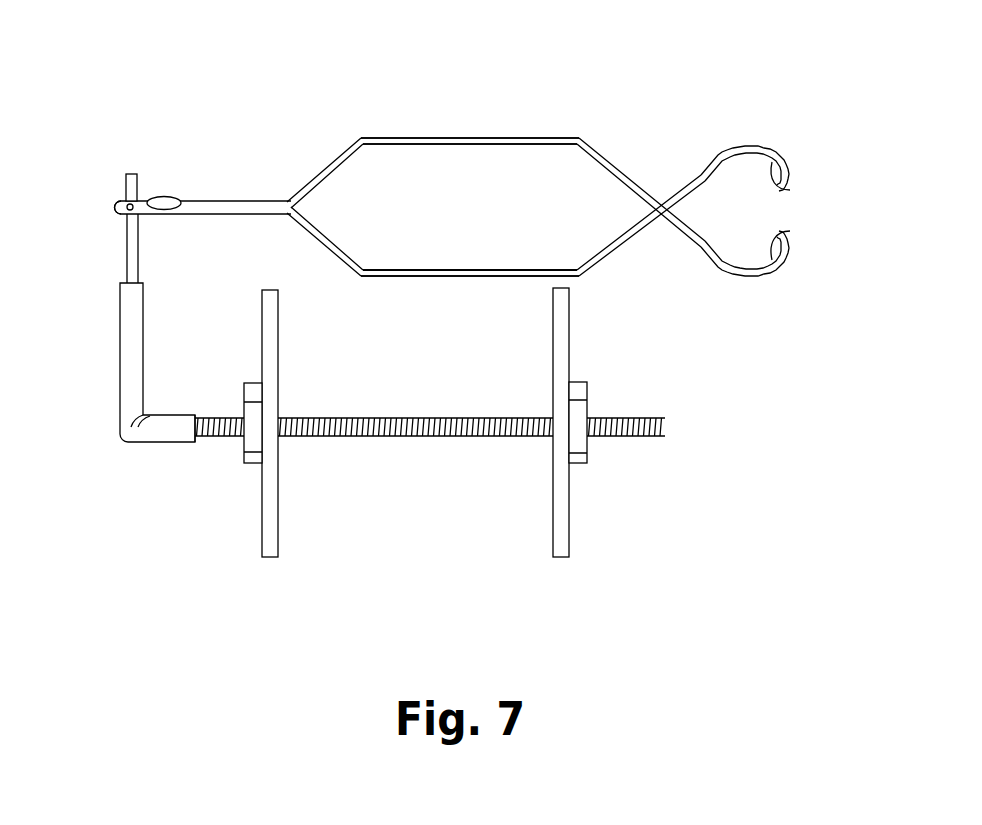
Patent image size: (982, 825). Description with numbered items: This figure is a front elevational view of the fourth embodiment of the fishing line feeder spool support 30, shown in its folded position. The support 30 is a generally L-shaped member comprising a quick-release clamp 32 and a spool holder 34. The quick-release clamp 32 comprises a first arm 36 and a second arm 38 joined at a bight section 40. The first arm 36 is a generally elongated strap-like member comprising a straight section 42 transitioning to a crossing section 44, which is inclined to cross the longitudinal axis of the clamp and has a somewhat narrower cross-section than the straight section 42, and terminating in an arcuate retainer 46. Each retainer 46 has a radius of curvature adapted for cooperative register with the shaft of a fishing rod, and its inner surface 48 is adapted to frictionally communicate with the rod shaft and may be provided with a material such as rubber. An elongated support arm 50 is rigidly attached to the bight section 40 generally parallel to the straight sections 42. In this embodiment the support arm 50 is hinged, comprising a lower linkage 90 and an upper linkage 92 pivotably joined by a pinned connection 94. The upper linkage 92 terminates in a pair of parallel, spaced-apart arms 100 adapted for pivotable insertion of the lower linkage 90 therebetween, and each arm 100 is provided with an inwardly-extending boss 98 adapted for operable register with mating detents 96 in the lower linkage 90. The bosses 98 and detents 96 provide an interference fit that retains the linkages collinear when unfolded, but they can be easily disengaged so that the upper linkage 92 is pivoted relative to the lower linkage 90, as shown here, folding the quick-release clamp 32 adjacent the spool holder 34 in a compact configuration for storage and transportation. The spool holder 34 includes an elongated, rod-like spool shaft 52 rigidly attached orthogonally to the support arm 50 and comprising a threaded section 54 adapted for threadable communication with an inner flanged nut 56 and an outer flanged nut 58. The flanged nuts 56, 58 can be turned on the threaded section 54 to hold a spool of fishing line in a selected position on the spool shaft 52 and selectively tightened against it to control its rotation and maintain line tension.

The fishing line feeder spool support 30 is at (456, 328).
The quick-release clamp 32 is at (562, 208).
The spool holder 34 is at (453, 390).
The first arm 36 is at (430, 280).
The second arm 38 is at (412, 127).
The bight section 40 is at (315, 168).
The straight section 42 is at (503, 135).
The crossing section 44 is at (613, 165).
The arcuate retainer 46 is at (745, 140).
The inner surface 48 is at (790, 190).
The support arm 50 is at (140, 281).
The spool shaft 52 is at (190, 420).
The threaded section 54 is at (352, 417).
The inner flanged nut 56 is at (273, 322).
The outer flanged nut 58 is at (567, 345).
The lower linkage 90 is at (127, 240).
The upper linkage 92 is at (227, 200).
The pinned connection 94 is at (115, 207).
The detents 96 is at (137, 180).
The boss 98 is at (170, 198).
The arms 100 is at (118, 203).